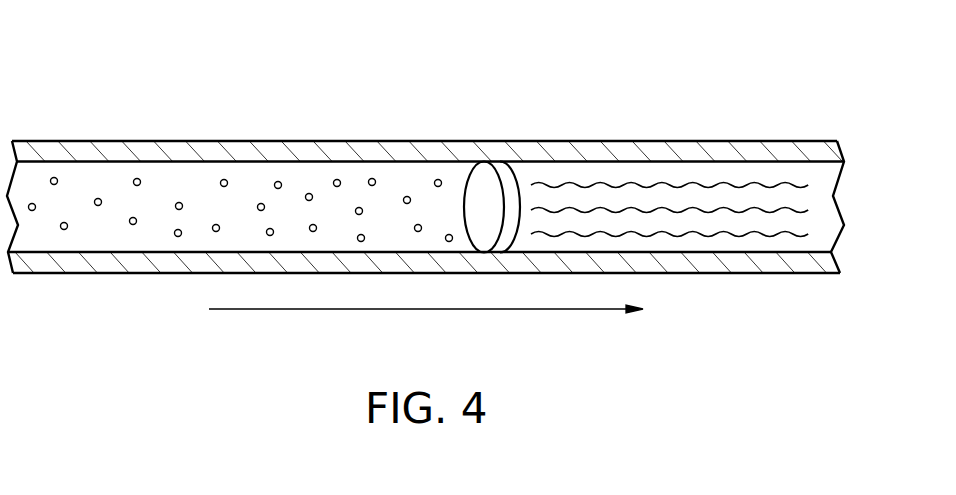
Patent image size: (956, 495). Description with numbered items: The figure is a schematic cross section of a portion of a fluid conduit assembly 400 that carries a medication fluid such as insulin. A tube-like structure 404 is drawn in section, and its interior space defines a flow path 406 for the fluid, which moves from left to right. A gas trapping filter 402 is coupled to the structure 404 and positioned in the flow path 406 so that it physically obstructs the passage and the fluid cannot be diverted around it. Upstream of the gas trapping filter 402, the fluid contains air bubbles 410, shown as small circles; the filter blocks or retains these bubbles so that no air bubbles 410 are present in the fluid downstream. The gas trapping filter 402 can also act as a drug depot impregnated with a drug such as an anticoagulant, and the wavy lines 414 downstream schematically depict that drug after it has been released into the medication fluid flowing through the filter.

The fluid conduit assembly 400 is at (128, 110).
The gas trapping filter 402 is at (487, 182).
The structure 404 is at (306, 141).
The flow path 406 is at (725, 195).
The air bubbles 410 is at (224, 179).
The wavy lines 414 is at (627, 182).